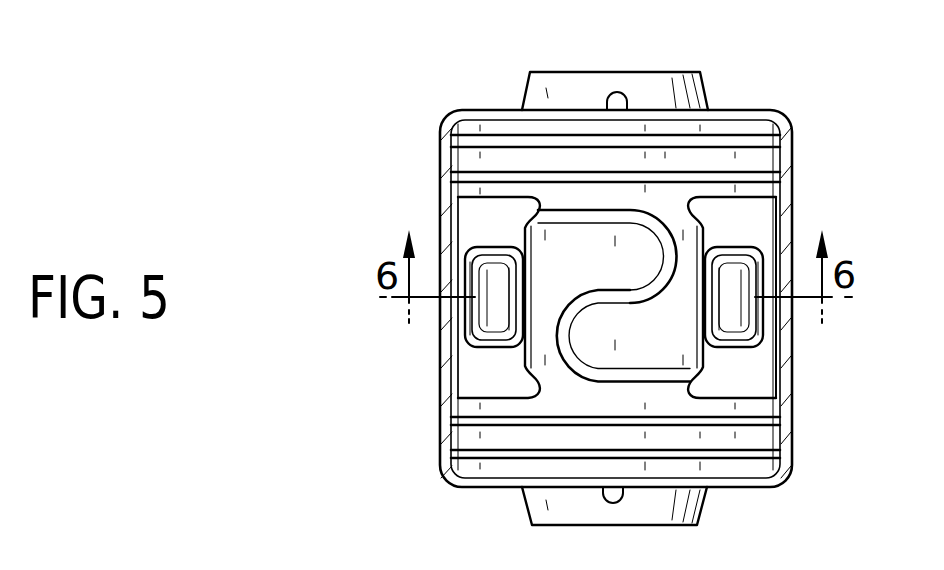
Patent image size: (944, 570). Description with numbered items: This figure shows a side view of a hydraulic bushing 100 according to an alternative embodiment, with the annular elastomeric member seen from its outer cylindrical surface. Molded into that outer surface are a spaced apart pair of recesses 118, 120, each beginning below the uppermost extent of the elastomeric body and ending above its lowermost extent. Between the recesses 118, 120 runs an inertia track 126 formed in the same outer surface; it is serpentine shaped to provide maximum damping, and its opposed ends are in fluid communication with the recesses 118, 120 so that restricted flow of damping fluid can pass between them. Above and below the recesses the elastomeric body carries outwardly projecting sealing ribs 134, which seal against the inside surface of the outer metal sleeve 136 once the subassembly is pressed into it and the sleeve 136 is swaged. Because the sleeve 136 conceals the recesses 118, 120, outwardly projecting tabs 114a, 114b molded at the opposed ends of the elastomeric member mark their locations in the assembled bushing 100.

The bushing 100 is at (760, 72).
The outwardly projecting tab 114a is at (626, 95).
The outwardly projecting tab 114b is at (623, 500).
The recess 118 is at (765, 222).
The recess 120 is at (462, 385).
The inertia track 126 is at (687, 384).
The sealing rib 134 is at (791, 137).
The outer metal sleeve 136 is at (783, 390).